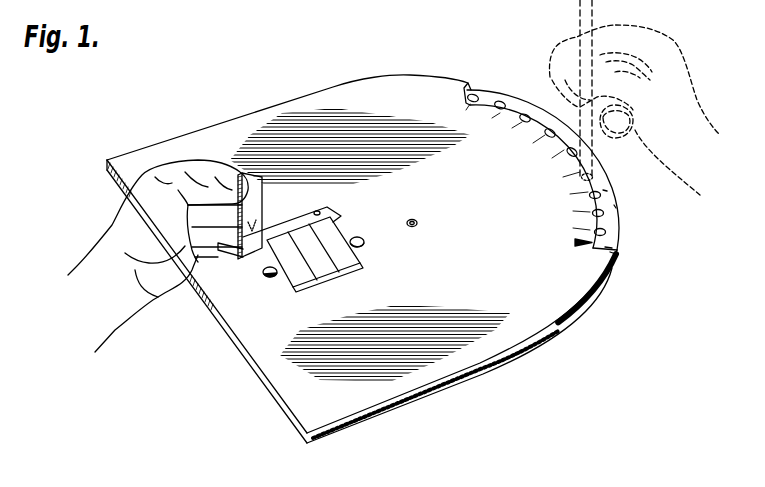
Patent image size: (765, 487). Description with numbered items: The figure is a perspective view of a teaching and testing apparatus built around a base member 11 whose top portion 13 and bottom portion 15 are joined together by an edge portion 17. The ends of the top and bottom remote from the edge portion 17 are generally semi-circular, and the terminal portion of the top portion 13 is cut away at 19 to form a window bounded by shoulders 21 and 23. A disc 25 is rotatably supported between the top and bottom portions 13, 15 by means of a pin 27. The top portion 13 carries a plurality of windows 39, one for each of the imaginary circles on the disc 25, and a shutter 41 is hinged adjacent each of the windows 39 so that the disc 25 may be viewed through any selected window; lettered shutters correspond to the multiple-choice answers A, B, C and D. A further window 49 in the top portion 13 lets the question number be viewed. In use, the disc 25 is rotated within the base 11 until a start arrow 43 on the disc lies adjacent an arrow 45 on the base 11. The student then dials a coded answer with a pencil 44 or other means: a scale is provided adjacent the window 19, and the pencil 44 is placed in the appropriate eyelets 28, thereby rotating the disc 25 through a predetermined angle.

The base member 11 is at (215, 327).
The top portion 13 is at (380, 403).
The bottom portion 15 is at (377, 420).
The edge portion 17 is at (320, 443).
The window 19 is at (538, 128).
The shoulder 21 is at (473, 88).
The shoulder 23 is at (609, 247).
The disc 25 is at (614, 206).
The pin 27 is at (415, 227).
The eyelets 28 is at (603, 190).
The windows 39 is at (265, 274).
The shutter 41 is at (270, 223).
The start arrow 43 is at (612, 252).
The pencil 44 is at (596, 14).
The arrow 45 is at (580, 248).
The window 49 is at (364, 249).